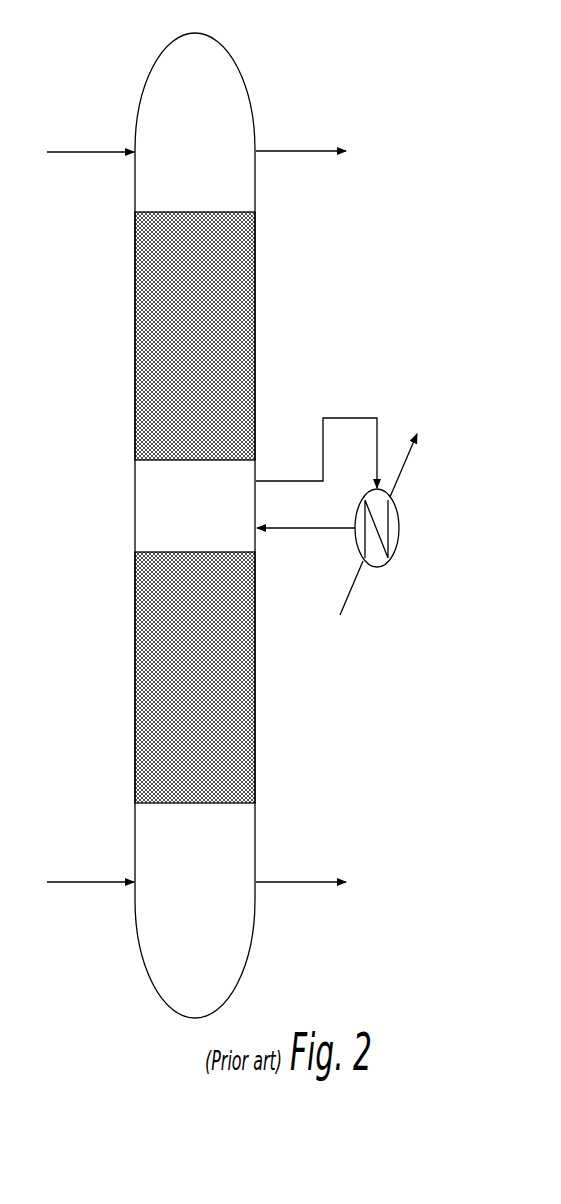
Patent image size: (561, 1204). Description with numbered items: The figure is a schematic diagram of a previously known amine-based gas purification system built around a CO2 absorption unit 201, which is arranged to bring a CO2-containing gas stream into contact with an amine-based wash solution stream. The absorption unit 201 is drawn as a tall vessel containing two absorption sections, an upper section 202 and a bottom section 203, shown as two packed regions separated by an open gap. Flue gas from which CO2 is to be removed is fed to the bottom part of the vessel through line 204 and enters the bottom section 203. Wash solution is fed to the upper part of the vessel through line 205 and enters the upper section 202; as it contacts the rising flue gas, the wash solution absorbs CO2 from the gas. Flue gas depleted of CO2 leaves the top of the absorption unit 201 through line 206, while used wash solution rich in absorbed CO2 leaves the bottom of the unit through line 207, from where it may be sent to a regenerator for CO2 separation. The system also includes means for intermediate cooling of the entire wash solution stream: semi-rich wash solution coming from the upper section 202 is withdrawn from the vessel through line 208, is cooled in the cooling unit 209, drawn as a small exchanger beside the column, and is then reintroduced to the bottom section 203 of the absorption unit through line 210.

The CO2 absorption unit 201 is at (240, 72).
The upper section 202 is at (255, 352).
The bottom section 203 is at (255, 670).
The line 204 is at (83, 886).
The line 205 is at (80, 150).
The line 206 is at (300, 155).
The line 207 is at (300, 878).
The line 208 is at (293, 478).
The cooling unit 209 is at (400, 541).
The line 210 is at (300, 533).